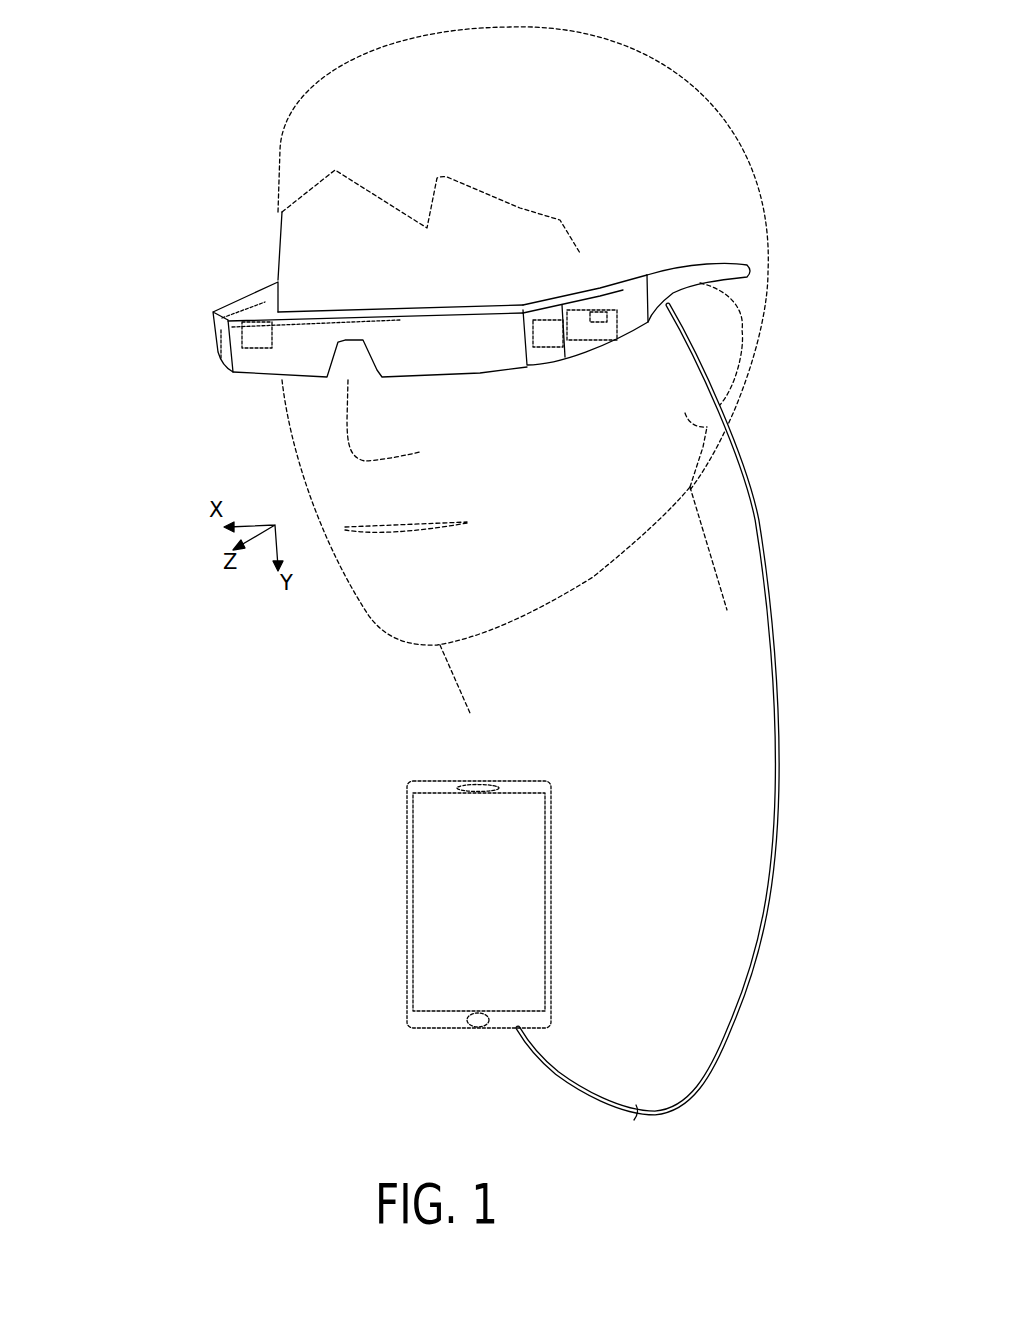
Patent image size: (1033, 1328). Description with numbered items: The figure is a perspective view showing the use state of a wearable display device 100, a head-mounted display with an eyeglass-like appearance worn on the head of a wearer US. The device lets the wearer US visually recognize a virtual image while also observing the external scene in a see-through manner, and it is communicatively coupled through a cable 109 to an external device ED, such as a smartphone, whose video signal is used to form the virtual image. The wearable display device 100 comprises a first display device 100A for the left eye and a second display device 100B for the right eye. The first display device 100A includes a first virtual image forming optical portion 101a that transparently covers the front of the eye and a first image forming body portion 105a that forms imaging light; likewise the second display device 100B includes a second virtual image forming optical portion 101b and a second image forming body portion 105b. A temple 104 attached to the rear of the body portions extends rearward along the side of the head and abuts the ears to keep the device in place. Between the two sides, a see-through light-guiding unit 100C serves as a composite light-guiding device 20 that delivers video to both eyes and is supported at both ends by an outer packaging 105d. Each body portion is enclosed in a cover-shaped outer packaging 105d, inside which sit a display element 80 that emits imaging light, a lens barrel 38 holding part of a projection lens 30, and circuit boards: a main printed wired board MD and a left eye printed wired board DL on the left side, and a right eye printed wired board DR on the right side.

The wearable display device 100 is at (420, 289).
The first display device 100A is at (603, 278).
The second display device 100B is at (222, 290).
The see-through light-guiding unit 100C is at (467, 434).
The composite light-guiding device 20 is at (417, 383).
The projection lens 30 is at (307, 300).
The lens barrel 38 is at (218, 328).
The display element 80 is at (241, 313).
The first virtual image forming optical portion 101a is at (482, 358).
The second virtual image forming optical portion 101b is at (275, 358).
The temple 104 is at (696, 262).
The first image forming body portion 105a is at (578, 342).
The second image forming body portion 105b is at (222, 358).
The outer packaging 105d is at (220, 356).
The cable 109 is at (770, 782).
The wearer US is at (713, 102).
The external device ED is at (437, 887).
The main printed wired board MD is at (617, 327).
The right eye printed wired board DR is at (215, 293).
The left eye printed wired board DL is at (568, 293).